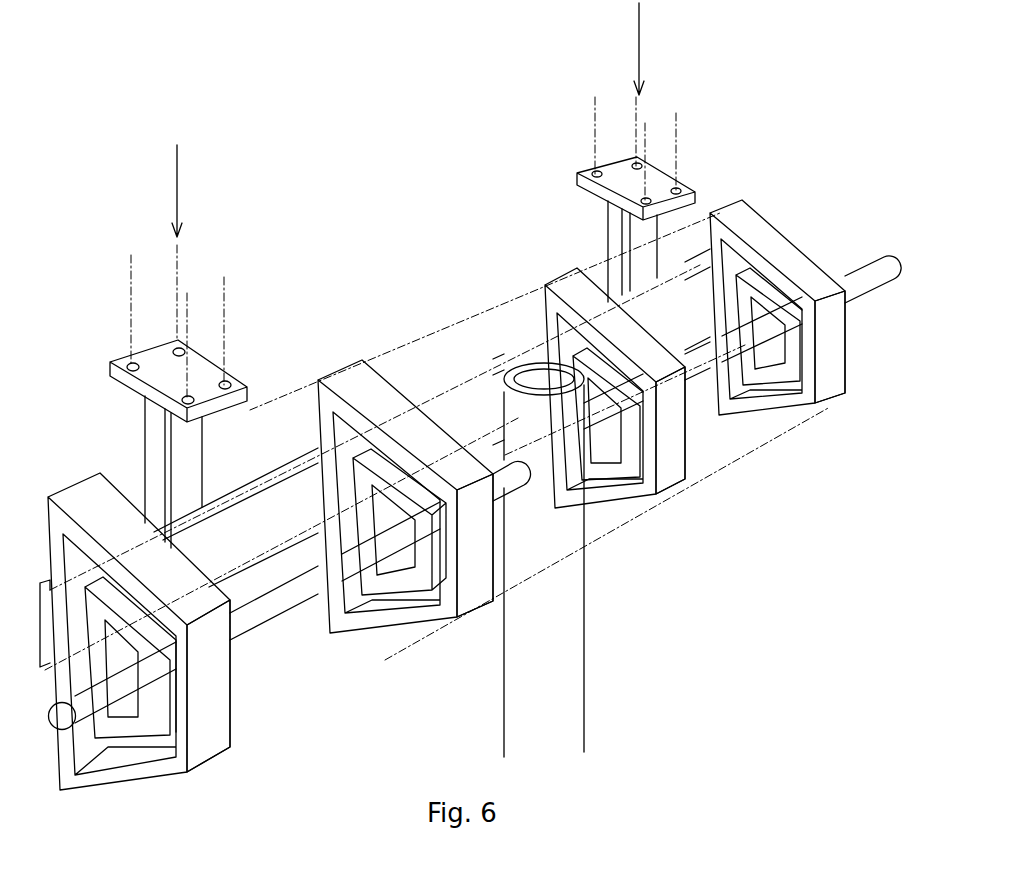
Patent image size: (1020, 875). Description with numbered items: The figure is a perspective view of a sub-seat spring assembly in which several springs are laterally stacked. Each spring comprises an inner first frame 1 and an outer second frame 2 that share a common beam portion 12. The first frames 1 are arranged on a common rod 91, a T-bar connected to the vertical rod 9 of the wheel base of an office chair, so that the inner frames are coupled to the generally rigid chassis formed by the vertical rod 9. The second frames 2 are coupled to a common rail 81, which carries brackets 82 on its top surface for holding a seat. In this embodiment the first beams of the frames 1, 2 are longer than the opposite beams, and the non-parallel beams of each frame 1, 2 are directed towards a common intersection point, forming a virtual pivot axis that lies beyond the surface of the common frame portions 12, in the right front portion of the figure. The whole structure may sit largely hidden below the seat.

The first frame 1 is at (465, 534).
The second frame 2 is at (462, 502).
The common beam portion 12 is at (554, 533).
The vertical rod 9 is at (614, 560).
The common rail 81 is at (375, 458).
The brackets 82 is at (402, 352).
The common rod 91 is at (475, 493).